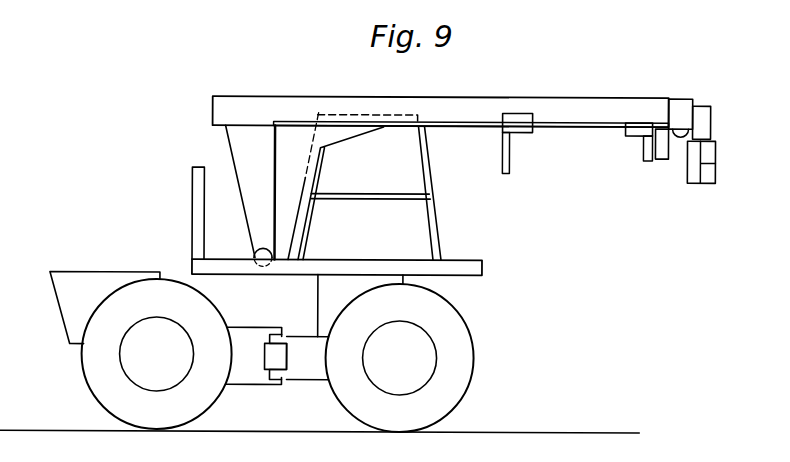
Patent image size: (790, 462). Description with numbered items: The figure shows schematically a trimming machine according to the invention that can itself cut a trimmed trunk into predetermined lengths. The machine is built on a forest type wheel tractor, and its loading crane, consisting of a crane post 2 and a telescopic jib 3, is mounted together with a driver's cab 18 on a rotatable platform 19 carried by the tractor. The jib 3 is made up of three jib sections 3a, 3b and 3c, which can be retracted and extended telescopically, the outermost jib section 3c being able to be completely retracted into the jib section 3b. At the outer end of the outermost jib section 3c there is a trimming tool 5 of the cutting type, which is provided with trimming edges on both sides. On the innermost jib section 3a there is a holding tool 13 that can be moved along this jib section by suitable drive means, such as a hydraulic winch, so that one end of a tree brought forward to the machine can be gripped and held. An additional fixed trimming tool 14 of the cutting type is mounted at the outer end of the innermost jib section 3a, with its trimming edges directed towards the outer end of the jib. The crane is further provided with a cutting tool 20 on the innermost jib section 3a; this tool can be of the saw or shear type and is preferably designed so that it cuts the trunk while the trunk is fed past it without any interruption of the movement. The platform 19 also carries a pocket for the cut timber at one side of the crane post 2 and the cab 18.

The crane post 2 is at (238, 156).
The telescopic jib 3 is at (441, 97).
The innermost jib section 3a is at (455, 116).
The jib section 3b is at (678, 108).
The outermost jib section 3c is at (704, 116).
The trimming tool 5 is at (715, 168).
The holding tool 13 is at (648, 160).
The fixed trimming tool 14 is at (662, 158).
The driver's cab 18 is at (432, 196).
The rotatable platform 19 is at (480, 275).
The cutting tool 20 is at (509, 172).